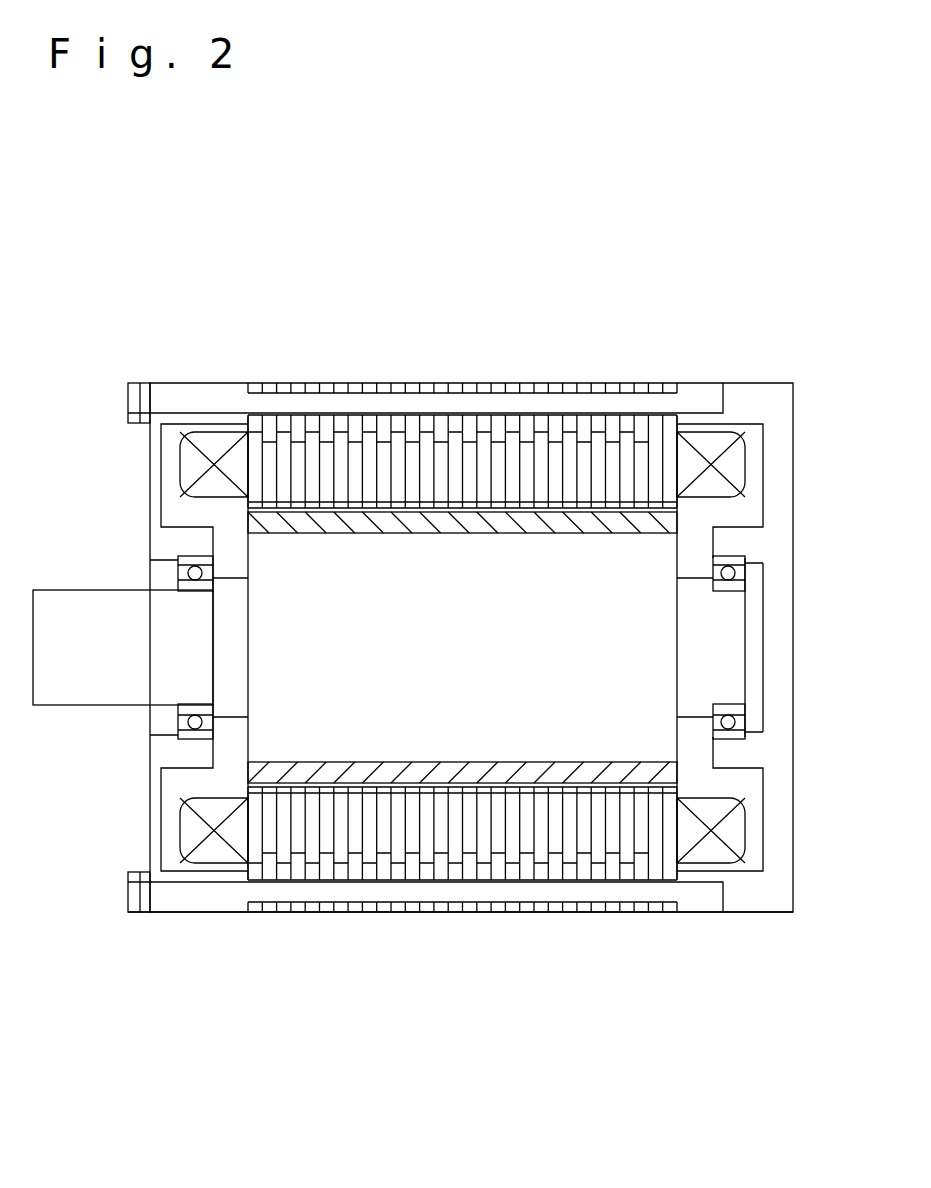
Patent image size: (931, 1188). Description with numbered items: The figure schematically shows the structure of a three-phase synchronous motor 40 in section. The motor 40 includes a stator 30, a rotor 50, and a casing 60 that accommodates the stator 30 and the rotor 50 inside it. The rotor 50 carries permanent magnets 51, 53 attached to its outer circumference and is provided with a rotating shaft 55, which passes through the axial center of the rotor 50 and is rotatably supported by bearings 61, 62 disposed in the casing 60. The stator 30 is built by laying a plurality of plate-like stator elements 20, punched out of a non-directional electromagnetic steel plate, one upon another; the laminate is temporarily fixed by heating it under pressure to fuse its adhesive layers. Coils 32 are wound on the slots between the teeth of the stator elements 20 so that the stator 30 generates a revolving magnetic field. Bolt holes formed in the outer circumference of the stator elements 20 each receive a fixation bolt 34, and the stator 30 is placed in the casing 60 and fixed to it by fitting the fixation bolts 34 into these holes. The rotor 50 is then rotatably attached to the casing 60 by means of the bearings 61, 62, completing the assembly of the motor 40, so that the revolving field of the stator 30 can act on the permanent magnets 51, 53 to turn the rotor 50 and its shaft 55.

The stator element 20 is at (527, 430).
The stator 30 is at (518, 582).
The coil 32 is at (737, 470).
The fixation bolt 34 is at (189, 403).
The three-phase synchronous motor 40 is at (582, 932).
The rotor 50 is at (534, 648).
The permanent magnet 51 is at (667, 517).
The permanent magnet 53 is at (662, 776).
The rotating shaft 55 is at (108, 677).
The casing 60 is at (757, 402).
The bearing 61 is at (183, 558).
The bearing 62 is at (740, 558).